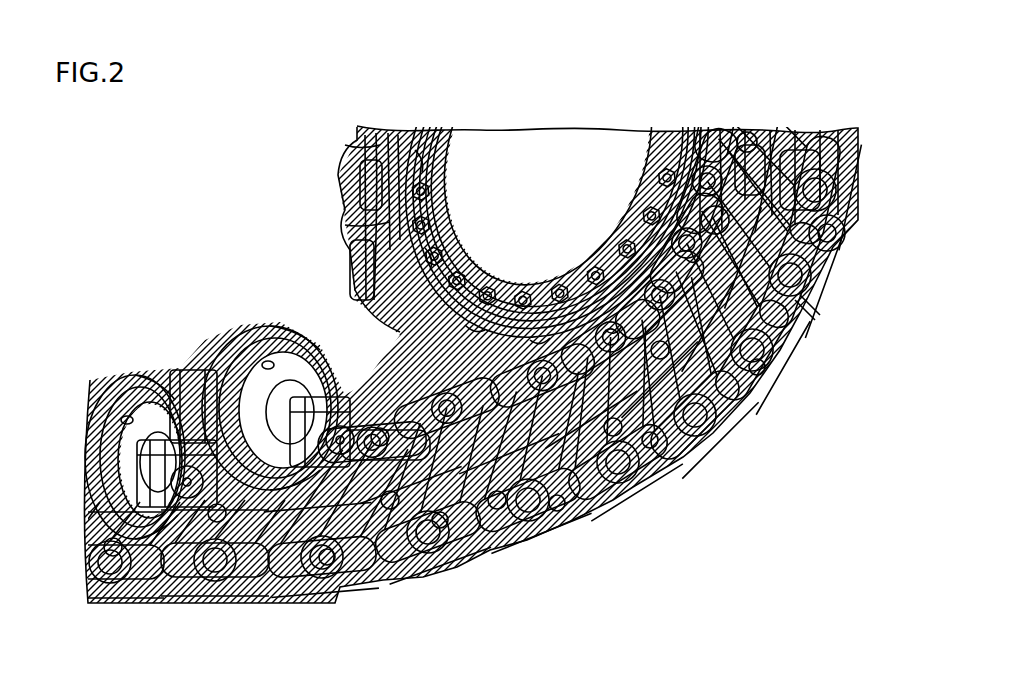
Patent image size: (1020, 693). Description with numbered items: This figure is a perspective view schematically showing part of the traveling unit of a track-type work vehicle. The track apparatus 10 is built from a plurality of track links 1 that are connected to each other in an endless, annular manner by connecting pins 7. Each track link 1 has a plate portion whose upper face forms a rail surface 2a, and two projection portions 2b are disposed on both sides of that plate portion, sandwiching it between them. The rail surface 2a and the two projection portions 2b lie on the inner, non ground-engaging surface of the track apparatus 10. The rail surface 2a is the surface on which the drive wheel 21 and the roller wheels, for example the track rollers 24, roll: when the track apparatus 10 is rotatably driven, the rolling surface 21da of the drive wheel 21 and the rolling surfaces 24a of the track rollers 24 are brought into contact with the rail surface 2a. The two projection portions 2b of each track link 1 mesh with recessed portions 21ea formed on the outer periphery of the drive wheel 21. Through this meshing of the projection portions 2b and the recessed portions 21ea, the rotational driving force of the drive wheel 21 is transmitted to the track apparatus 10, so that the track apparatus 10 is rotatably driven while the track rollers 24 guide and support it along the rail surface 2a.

The track link 1 is at (717, 433).
The rail surface 2a is at (372, 463).
The projection portion 2b is at (715, 220).
The connecting pin 7 is at (827, 233).
The track apparatus 10 is at (807, 313).
The drive wheel 21 is at (342, 188).
The rolling surface of drive wheel 21da is at (360, 221).
The recessed portion 21ea is at (690, 263).
The track roller 24 is at (150, 417).
The rolling surface of roller 24a is at (112, 388).